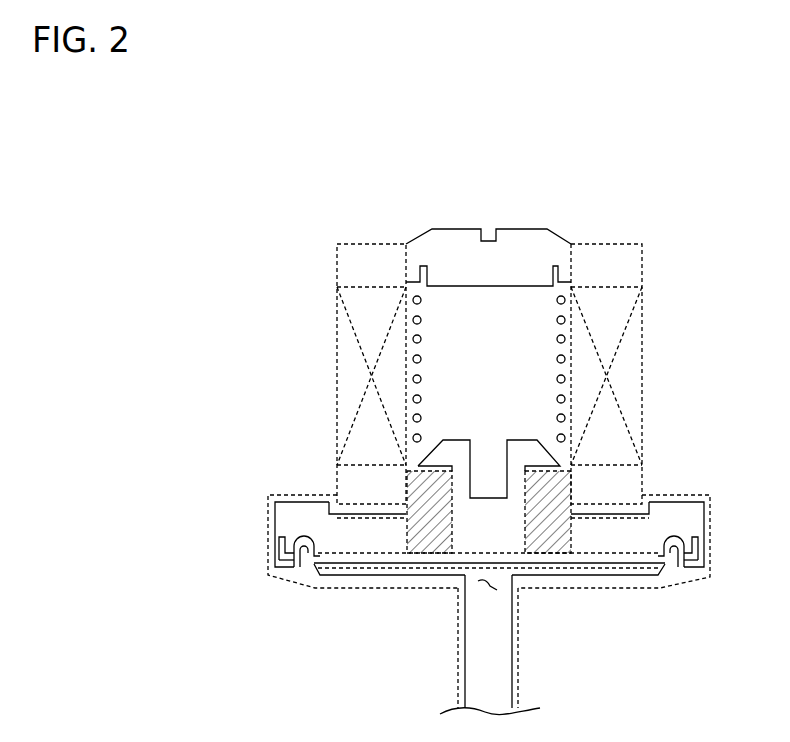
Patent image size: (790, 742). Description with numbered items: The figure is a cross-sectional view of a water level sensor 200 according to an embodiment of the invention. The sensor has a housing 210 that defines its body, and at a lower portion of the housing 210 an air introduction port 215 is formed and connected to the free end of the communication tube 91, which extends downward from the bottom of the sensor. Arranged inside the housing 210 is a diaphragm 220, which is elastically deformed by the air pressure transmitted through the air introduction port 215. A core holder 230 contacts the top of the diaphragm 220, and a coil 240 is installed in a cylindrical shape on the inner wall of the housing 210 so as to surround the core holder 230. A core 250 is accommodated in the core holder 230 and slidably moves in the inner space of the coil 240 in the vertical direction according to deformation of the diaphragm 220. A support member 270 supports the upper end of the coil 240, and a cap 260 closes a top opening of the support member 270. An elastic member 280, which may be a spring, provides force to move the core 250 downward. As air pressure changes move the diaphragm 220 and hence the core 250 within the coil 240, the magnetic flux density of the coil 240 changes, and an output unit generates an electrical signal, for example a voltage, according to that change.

The water level sensor 200 is at (276, 277).
The housing 210 is at (268, 511).
The air introduction port 215 is at (470, 600).
The diaphragm 220 is at (298, 563).
The core holder 230 is at (460, 549).
The coil 240 is at (337, 378).
The core 250 is at (413, 492).
The cap 260 is at (465, 229).
The support member 270 is at (615, 252).
The elastic member 280 is at (566, 300).
The communication tube 91 is at (518, 632).